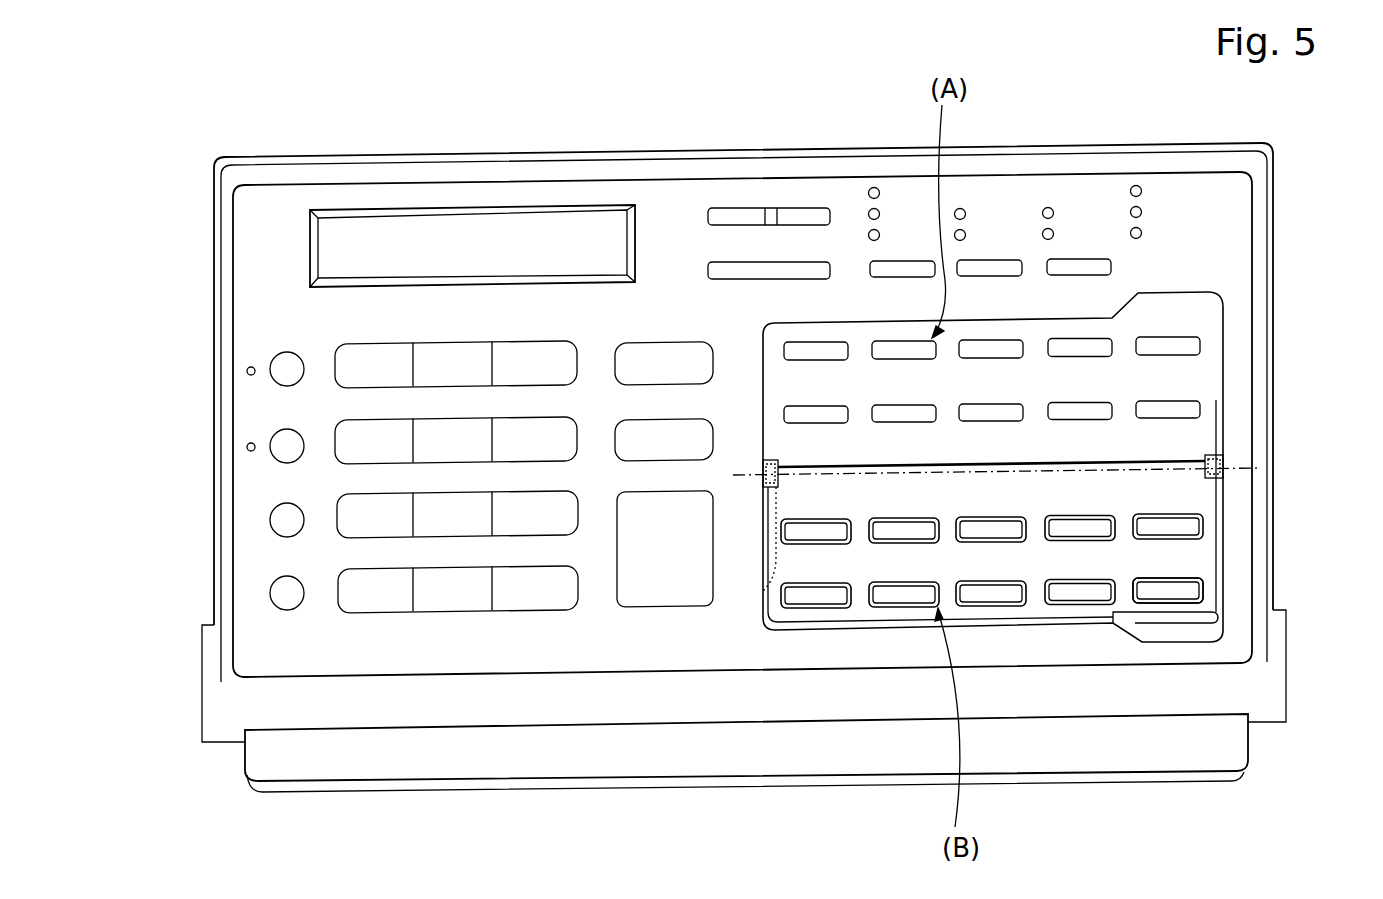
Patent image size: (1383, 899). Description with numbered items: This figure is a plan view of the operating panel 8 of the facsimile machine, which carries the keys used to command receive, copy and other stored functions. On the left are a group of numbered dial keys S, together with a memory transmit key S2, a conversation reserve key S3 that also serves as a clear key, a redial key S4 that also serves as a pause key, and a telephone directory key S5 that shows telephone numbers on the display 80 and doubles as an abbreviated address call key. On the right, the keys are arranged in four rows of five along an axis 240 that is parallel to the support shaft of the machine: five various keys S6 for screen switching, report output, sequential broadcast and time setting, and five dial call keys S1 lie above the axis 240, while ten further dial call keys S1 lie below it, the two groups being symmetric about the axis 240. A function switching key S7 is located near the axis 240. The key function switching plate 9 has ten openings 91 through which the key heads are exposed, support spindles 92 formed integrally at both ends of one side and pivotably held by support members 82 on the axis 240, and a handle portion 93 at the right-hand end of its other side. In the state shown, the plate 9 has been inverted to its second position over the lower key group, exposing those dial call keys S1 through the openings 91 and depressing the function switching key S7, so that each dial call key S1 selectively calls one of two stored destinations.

The operating panel 8 is at (1276, 234).
The display 80 is at (515, 228).
The support member 82 is at (771, 460).
The support spindle 92 is at (763, 482).
The axis 240 is at (1182, 468).
The key function switching plate 9 is at (1207, 548).
The opening 91 is at (1207, 590).
The handle portion 93 is at (1172, 622).
The numbered dial keys S is at (450, 616).
The dial call key S1 is at (813, 414).
The memory transmit key S2 is at (273, 380).
The conversation reserve key S3 is at (273, 457).
The redial key S4 is at (273, 525).
The telephone directory key S5 is at (273, 595).
The various keys S6 is at (813, 354).
The function switching key S7 is at (762, 592).